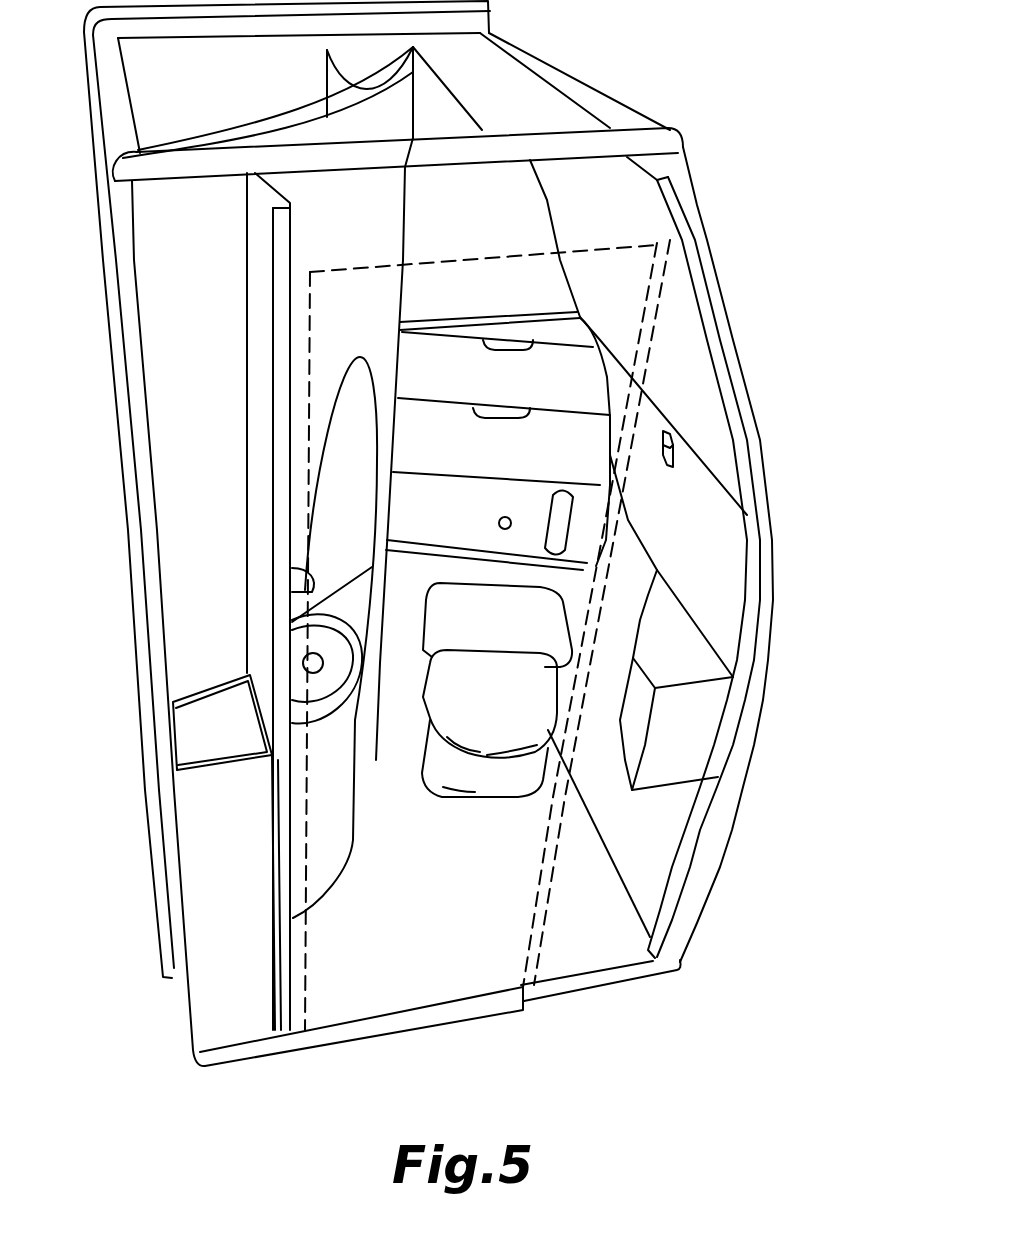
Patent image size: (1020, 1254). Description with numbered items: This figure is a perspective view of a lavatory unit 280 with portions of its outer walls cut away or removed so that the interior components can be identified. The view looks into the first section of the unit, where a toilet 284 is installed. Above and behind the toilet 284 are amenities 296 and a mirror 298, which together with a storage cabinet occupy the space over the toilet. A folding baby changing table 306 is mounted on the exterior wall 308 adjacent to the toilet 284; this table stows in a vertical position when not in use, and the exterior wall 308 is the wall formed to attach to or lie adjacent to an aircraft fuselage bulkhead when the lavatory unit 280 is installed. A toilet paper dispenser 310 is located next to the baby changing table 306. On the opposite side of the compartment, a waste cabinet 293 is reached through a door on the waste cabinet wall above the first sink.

The lavatory unit 280 is at (701, 81).
The mirror 298 is at (487, 190).
The amenities 296 is at (533, 452).
The exterior wall 308 is at (760, 415).
The folding baby changing table 306 is at (695, 517).
The toilet paper dispenser 310 is at (670, 645).
The toilet 284 is at (498, 705).
The waste cabinet 293 is at (205, 748).